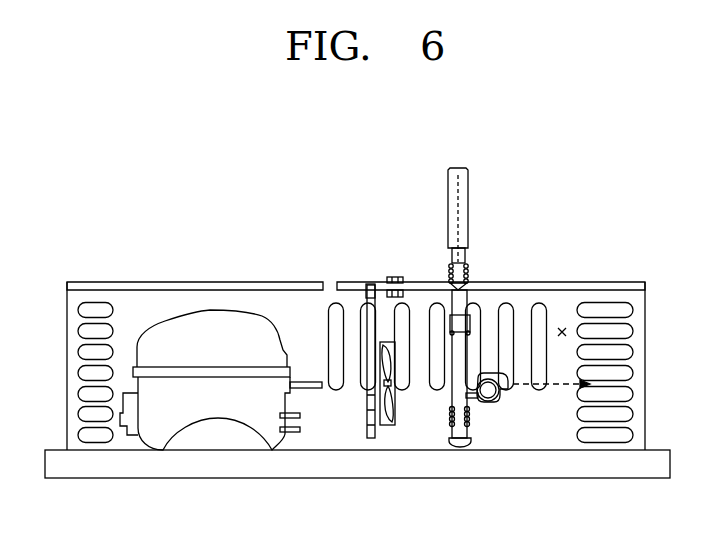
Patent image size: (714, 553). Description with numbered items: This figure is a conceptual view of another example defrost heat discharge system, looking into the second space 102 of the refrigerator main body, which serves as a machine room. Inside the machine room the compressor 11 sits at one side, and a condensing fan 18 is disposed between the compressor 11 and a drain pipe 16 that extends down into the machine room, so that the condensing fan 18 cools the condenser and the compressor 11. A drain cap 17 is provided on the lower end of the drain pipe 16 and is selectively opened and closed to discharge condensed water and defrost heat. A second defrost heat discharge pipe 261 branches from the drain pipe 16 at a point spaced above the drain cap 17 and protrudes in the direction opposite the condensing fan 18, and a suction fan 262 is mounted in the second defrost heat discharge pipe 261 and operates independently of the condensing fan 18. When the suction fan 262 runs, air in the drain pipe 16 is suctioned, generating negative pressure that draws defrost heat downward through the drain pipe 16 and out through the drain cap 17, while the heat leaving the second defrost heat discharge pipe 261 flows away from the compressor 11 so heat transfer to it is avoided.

The compressor 11 is at (218, 332).
The drain pipe 16 is at (468, 183).
The drain cap 17 is at (455, 447).
The condensing fan 18 is at (385, 342).
The second space 102 is at (562, 328).
The second defrost heat discharge pipe 261 is at (483, 402).
The suction fan 262 is at (476, 402).